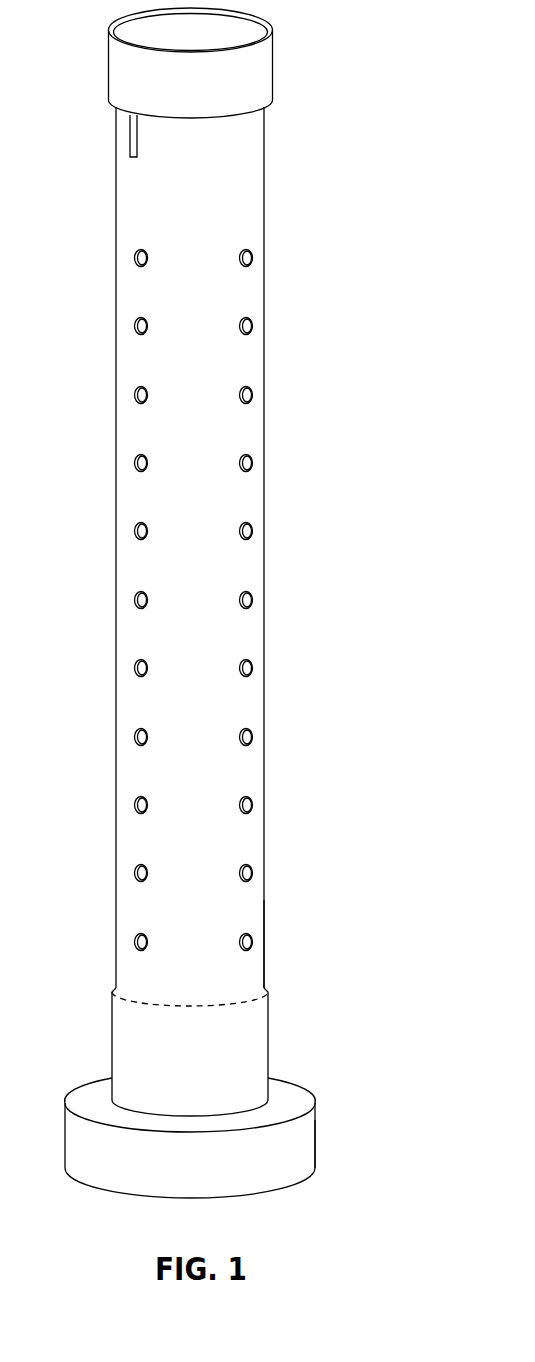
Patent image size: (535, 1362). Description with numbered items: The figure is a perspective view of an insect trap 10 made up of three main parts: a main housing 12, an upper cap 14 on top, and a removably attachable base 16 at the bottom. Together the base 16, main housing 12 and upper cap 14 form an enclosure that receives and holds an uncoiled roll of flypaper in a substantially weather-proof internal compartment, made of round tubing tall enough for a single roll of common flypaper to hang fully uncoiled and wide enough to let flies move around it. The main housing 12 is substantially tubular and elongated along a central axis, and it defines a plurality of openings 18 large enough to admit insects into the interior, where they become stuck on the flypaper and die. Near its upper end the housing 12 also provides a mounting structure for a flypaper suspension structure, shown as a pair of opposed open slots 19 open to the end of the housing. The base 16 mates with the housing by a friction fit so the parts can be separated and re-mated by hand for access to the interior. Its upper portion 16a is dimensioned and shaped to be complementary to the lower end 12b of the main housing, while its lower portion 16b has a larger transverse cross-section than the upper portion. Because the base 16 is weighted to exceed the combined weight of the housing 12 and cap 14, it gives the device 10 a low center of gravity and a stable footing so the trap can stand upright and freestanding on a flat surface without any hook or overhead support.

The insect trap 10 is at (370, 295).
The main housing 12 is at (252, 180).
The lower end of the main housing 12b is at (274, 966).
The upper cap 14 is at (253, 78).
The base 16 is at (300, 1133).
The upper portion of the base 16a is at (276, 1005).
The lower portion of the base 16b is at (326, 1170).
The openings 18 is at (253, 327).
The open slots 19 is at (118, 115).